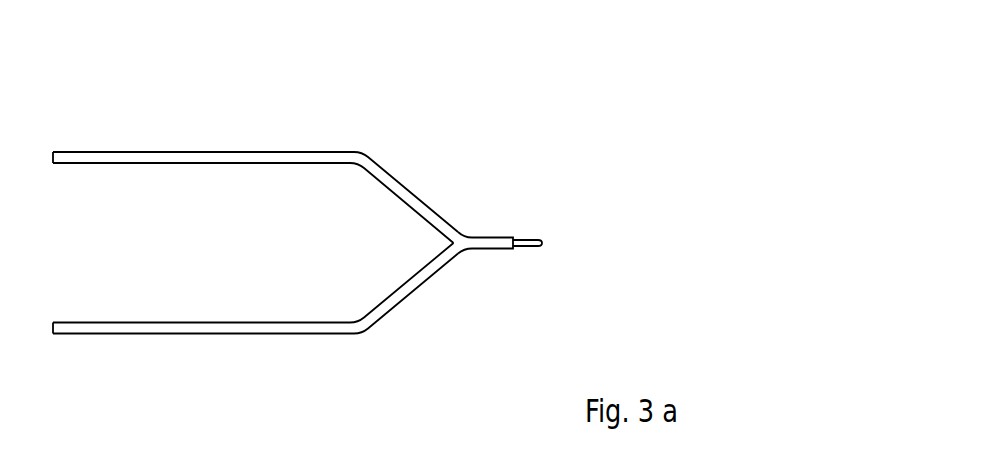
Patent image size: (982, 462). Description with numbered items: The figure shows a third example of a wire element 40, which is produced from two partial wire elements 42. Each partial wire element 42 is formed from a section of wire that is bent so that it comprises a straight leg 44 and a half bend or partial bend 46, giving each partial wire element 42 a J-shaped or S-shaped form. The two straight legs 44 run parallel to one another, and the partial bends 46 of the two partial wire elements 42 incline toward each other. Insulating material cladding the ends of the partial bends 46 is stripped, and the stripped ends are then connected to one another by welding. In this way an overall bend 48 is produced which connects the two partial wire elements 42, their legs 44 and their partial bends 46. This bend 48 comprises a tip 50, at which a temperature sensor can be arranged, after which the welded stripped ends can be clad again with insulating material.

The wire element 40 is at (576, 146).
The partial wire element 42 is at (301, 139).
The straight leg 44 is at (206, 157).
The partial bend 46 is at (403, 185).
The bend 48 is at (468, 220).
The tip 50 is at (545, 243).